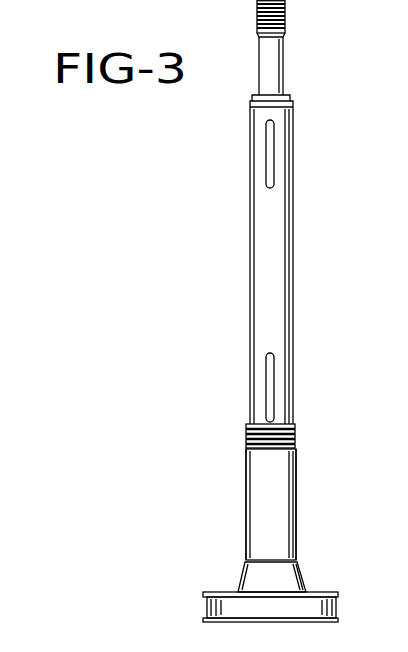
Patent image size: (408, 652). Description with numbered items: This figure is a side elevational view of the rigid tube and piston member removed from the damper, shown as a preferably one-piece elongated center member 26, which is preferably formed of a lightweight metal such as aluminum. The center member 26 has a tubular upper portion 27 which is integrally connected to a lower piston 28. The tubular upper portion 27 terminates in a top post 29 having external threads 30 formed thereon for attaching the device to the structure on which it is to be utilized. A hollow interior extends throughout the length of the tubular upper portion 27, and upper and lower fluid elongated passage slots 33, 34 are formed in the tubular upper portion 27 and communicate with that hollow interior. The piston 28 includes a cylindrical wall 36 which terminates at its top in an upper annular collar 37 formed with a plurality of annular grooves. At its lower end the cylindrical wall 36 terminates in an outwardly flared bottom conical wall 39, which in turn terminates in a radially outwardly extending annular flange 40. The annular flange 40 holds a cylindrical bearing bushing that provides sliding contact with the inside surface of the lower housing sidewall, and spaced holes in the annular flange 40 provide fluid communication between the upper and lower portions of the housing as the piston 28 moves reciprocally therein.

The center member 26 is at (292, 299).
The tubular upper portion 27 is at (272, 237).
The lower piston 28 is at (279, 524).
The top post 29 is at (276, 59).
The external threads 30 is at (271, 15).
The upper fluid elongated passage slot 33 is at (270, 148).
The lower fluid elongated passage slot 34 is at (270, 392).
The cylindrical wall 36 is at (298, 501).
The upper annular collar 37 is at (296, 433).
The bottom conical wall 39 is at (251, 577).
The annular flange 40 is at (222, 607).